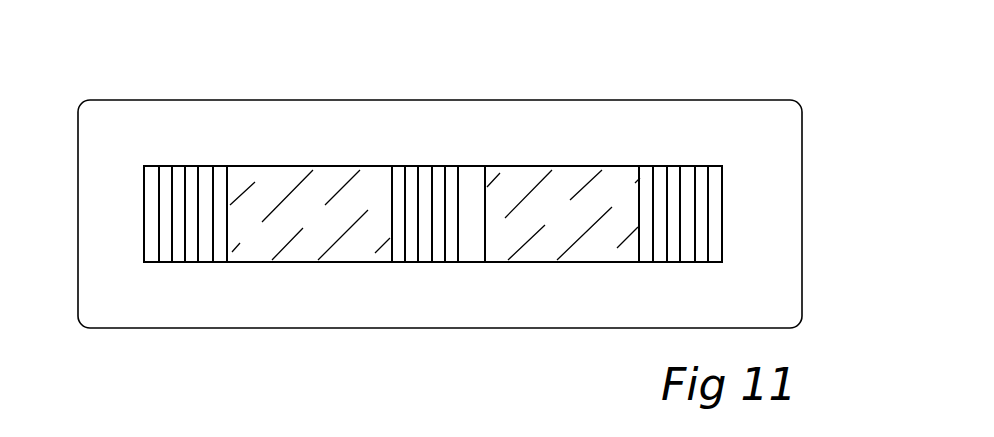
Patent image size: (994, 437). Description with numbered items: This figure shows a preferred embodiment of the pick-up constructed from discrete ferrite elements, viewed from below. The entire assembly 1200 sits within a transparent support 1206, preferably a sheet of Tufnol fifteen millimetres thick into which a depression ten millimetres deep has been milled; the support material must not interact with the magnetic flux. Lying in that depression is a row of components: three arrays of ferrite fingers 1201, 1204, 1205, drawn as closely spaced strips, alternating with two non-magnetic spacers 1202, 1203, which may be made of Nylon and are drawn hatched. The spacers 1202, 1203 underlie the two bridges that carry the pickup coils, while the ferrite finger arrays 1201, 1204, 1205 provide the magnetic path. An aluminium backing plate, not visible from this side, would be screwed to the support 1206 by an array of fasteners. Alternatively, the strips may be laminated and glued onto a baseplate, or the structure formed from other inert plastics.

The entire assembly 1200 is at (812, 37).
The array of ferrite fingers 1201 is at (181, 166).
The non-magnetic spacer 1202 is at (322, 166).
The non-magnetic spacer 1203 is at (577, 166).
The array of ferrite fingers 1204 is at (456, 263).
The array of ferrite fingers 1205 is at (690, 168).
The transparent support 1206 is at (860, 260).